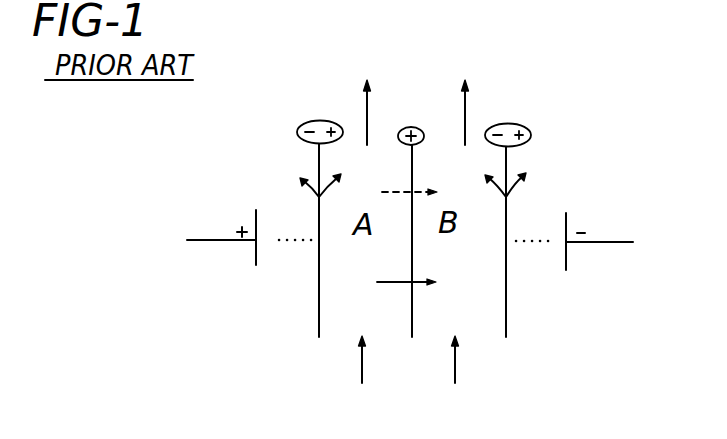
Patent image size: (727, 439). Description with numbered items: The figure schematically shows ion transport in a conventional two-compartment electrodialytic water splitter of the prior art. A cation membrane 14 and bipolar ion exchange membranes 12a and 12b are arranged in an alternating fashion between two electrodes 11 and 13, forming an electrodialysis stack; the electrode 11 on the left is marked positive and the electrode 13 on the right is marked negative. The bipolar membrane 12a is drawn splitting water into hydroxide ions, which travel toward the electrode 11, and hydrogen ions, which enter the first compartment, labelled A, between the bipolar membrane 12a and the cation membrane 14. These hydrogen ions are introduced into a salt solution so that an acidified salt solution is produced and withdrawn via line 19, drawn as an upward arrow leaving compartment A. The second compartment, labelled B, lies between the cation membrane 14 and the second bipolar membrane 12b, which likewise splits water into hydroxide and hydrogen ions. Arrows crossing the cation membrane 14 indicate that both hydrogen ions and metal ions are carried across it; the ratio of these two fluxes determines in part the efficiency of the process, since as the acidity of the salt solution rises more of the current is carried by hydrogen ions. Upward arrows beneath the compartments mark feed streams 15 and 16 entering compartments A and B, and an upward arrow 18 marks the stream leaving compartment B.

The electrode 11 is at (255, 254).
The bipolar ion exchange membrane 12a is at (320, 310).
The bipolar ion exchange membrane 12b is at (506, 312).
The electrode 13 is at (567, 258).
The cation membrane 14 is at (412, 312).
The feed inlet to compartment A 15 is at (363, 362).
The feed inlet to compartment B 16 is at (456, 365).
The outlet from compartment B 18 is at (467, 107).
The line 19 is at (368, 105).